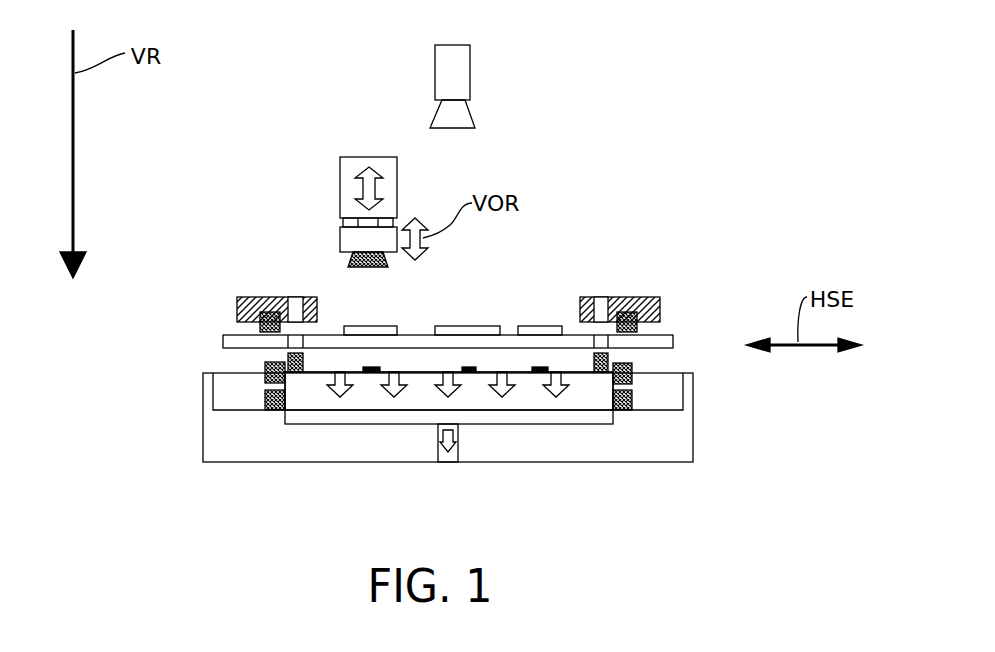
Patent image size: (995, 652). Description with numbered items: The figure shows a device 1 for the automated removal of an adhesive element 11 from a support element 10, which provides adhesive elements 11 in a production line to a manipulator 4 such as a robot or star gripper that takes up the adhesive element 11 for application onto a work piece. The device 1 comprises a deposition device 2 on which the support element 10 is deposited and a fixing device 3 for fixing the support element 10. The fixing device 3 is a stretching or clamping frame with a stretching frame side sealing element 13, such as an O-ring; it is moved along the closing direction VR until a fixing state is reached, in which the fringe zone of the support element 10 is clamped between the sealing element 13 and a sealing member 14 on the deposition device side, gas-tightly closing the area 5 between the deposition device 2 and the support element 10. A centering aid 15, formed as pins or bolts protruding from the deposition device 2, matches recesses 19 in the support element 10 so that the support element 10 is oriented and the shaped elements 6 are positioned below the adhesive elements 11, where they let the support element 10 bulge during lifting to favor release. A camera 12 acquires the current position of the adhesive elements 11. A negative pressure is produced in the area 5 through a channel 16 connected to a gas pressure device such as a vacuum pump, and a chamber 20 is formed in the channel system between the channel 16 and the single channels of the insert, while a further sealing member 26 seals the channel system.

The device 1 is at (710, 146).
The deposition device 2 is at (655, 457).
The fixing device 3 is at (247, 297).
The manipulator 4 is at (347, 166).
The area 5 is at (510, 358).
The shaped elements 6 is at (363, 367).
The support element 10 is at (673, 338).
The adhesive element 11 is at (392, 325).
The camera 12 is at (462, 68).
The stretching frame side sealing element 13 is at (278, 297).
The deposition device side sealing member 14 is at (265, 368).
The centering aid 15 is at (288, 358).
The channel 16 is at (447, 453).
The recesses 19 is at (603, 342).
The chamber 20 is at (364, 420).
The sealing member 26 is at (633, 400).